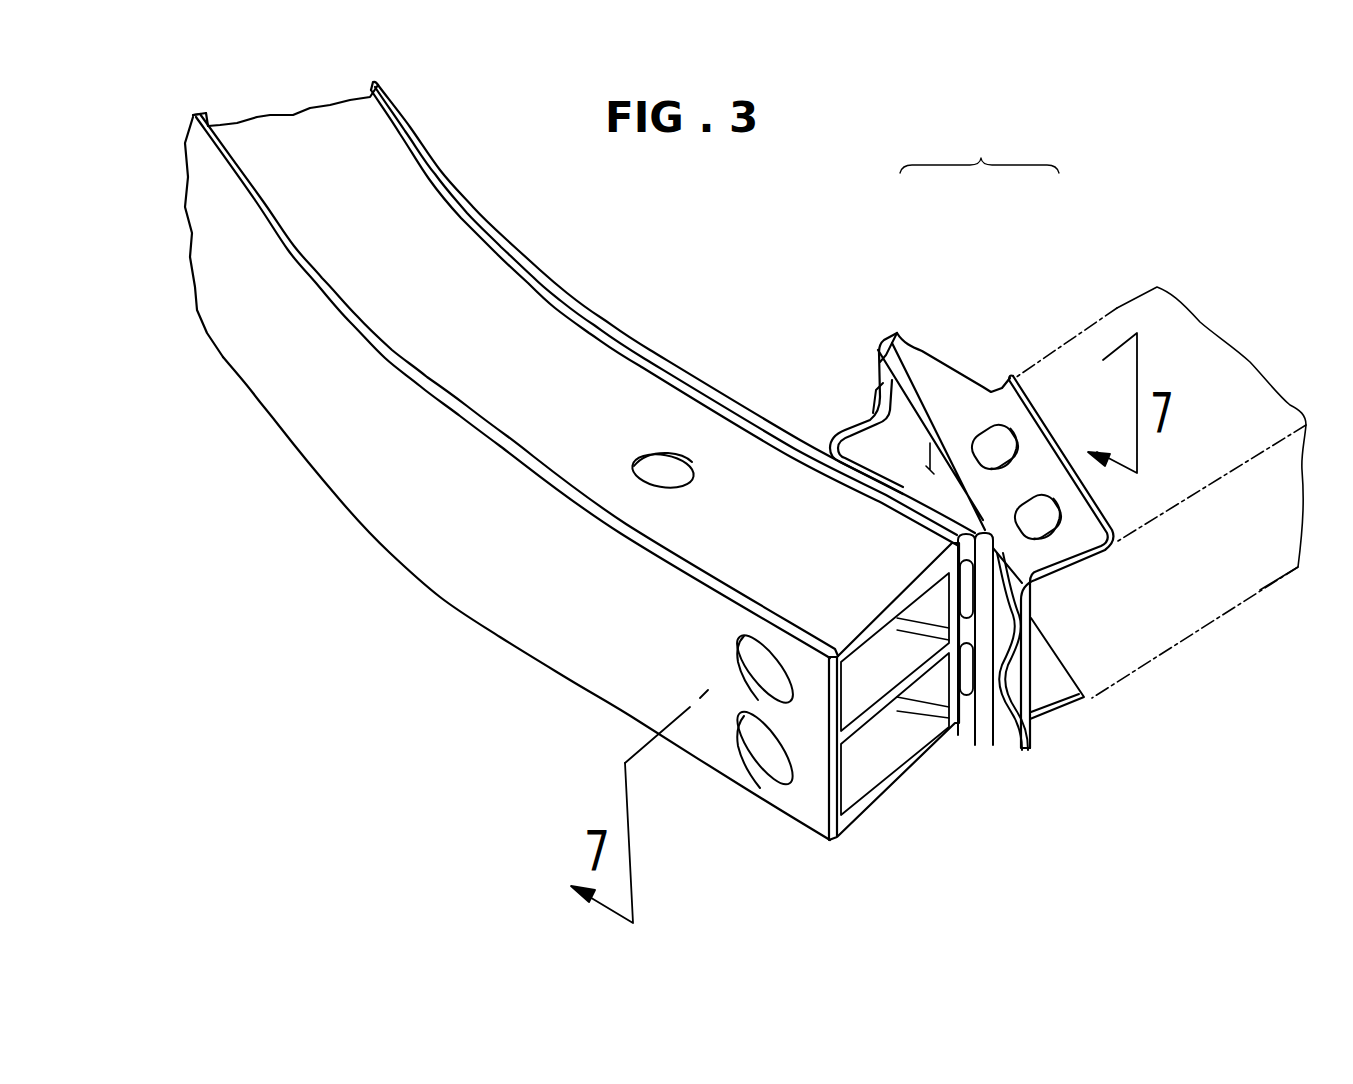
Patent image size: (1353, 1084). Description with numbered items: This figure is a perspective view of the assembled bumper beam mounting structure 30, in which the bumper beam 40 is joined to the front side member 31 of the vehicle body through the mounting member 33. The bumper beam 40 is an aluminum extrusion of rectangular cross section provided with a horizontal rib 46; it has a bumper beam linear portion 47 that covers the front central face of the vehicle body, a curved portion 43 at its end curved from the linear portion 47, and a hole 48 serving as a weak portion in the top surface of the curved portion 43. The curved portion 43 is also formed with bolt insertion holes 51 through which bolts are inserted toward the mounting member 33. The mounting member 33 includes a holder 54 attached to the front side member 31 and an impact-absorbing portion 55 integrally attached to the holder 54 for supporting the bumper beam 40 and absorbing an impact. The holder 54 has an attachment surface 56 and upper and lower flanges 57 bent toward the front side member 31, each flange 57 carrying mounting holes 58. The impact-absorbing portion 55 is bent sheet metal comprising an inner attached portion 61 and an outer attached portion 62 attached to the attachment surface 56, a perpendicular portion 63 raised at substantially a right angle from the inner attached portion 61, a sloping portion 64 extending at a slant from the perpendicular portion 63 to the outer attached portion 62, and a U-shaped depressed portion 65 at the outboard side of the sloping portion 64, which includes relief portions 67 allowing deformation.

The bumper beam mounting structure 30 is at (1098, 740).
The front side member 31 is at (1117, 308).
The mounting member 33 is at (979, 151).
The bumper beam 40 is at (265, 525).
The curved portion 43 is at (598, 660).
The horizontal rib 46 is at (889, 697).
The bumper beam linear portion 47 is at (227, 330).
The hole (weak portion) 48 is at (660, 455).
The bolt insertion hole 51 is at (748, 676).
The holder 54 is at (950, 358).
The impact-absorbing portion 55 is at (838, 410).
The attachment surface 56 is at (930, 470).
The upper and lower flanges 57 is at (995, 388).
The mounting hole 58 is at (997, 430).
The inner attached portion 61 is at (880, 362).
The outer attached portion 62 is at (1003, 741).
The perpendicular portion 63 is at (850, 405).
The sloping portion 64 is at (887, 493).
The depressed portion 65 is at (1035, 694).
The relief portion (hole) 67 is at (964, 597).